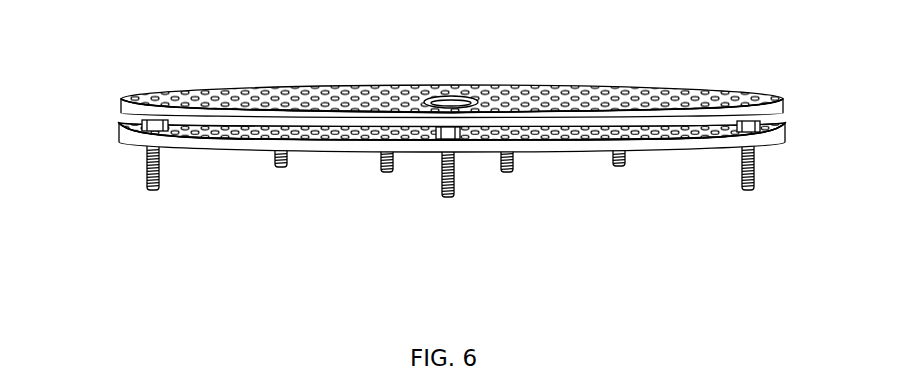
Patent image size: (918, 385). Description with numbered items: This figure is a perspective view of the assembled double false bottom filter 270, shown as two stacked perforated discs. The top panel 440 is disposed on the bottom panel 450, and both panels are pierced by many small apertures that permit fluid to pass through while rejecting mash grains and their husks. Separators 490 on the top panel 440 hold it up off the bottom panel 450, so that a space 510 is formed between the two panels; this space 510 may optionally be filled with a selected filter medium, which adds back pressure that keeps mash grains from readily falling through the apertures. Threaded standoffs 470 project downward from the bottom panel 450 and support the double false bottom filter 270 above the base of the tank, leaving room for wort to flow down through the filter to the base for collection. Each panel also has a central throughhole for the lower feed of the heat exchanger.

The double false bottom filter 270 is at (441, 184).
The space 510 is at (124, 121).
The bottom panel 450 is at (772, 108).
The separators 490 is at (778, 126).
The top panel 440 is at (767, 138).
The standoffs 470 is at (741, 167).